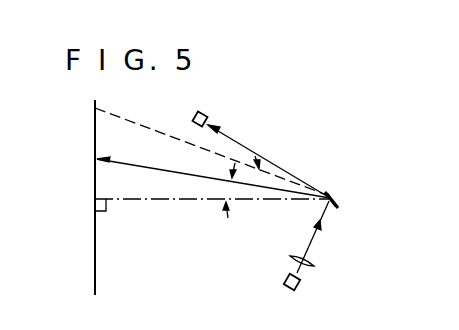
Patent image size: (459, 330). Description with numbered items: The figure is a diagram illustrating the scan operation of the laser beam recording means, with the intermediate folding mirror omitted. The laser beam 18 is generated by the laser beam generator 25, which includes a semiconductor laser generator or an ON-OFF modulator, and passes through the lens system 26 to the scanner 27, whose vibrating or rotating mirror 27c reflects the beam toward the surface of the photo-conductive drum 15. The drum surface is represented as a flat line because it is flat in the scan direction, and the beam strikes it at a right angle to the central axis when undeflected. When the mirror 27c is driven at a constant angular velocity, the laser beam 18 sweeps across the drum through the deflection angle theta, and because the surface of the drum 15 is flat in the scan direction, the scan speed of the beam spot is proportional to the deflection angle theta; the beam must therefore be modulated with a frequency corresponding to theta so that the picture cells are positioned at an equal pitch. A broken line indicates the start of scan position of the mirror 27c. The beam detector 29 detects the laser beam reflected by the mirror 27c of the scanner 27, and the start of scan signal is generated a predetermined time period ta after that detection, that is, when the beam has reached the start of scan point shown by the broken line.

The photo-conductive drum 15 is at (92, 265).
The laser beam 18 is at (138, 160).
The laser beam generator 25 is at (301, 286).
The lens system 26 is at (315, 260).
The scanner 27 is at (336, 190).
The mirror 27c is at (339, 202).
The beam detector 29 is at (207, 116).
The predetermined time period ta is at (258, 156).
The deflection angle theta is at (220, 190).